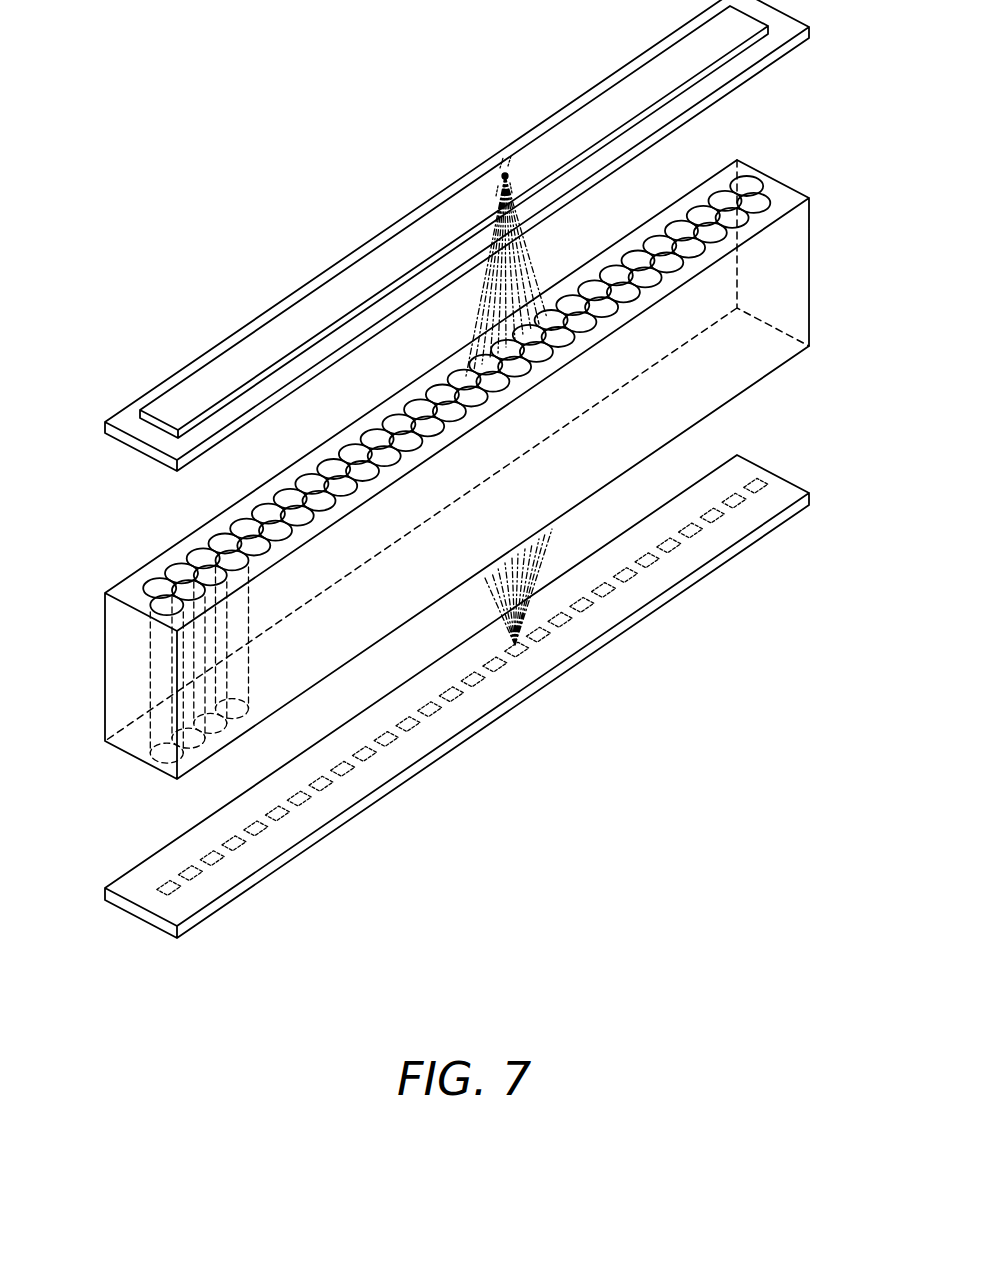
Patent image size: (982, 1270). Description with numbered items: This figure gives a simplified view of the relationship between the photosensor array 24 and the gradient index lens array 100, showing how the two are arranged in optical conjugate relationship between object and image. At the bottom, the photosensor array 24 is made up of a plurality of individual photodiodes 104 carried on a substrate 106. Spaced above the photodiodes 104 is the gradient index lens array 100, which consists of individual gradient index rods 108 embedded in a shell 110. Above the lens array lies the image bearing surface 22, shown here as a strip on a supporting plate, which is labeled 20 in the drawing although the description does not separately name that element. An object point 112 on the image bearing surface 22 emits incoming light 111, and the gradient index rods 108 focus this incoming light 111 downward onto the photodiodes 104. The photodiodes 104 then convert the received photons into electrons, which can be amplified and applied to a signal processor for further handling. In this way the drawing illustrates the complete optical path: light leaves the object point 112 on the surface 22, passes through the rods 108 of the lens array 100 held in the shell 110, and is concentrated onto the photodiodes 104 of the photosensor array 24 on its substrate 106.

The illumination source board 20 is at (618, 64).
The image bearing surface 22 is at (283, 340).
The photosensor array 24 is at (457, 722).
The gradient index lens array 100 is at (460, 419).
The photodiodes 104 is at (160, 892).
The substrate 106 is at (478, 723).
The gradient index rods 108 is at (160, 585).
The shell 110 is at (105, 667).
The incoming light 111 is at (536, 283).
The object point 112 is at (505, 175).